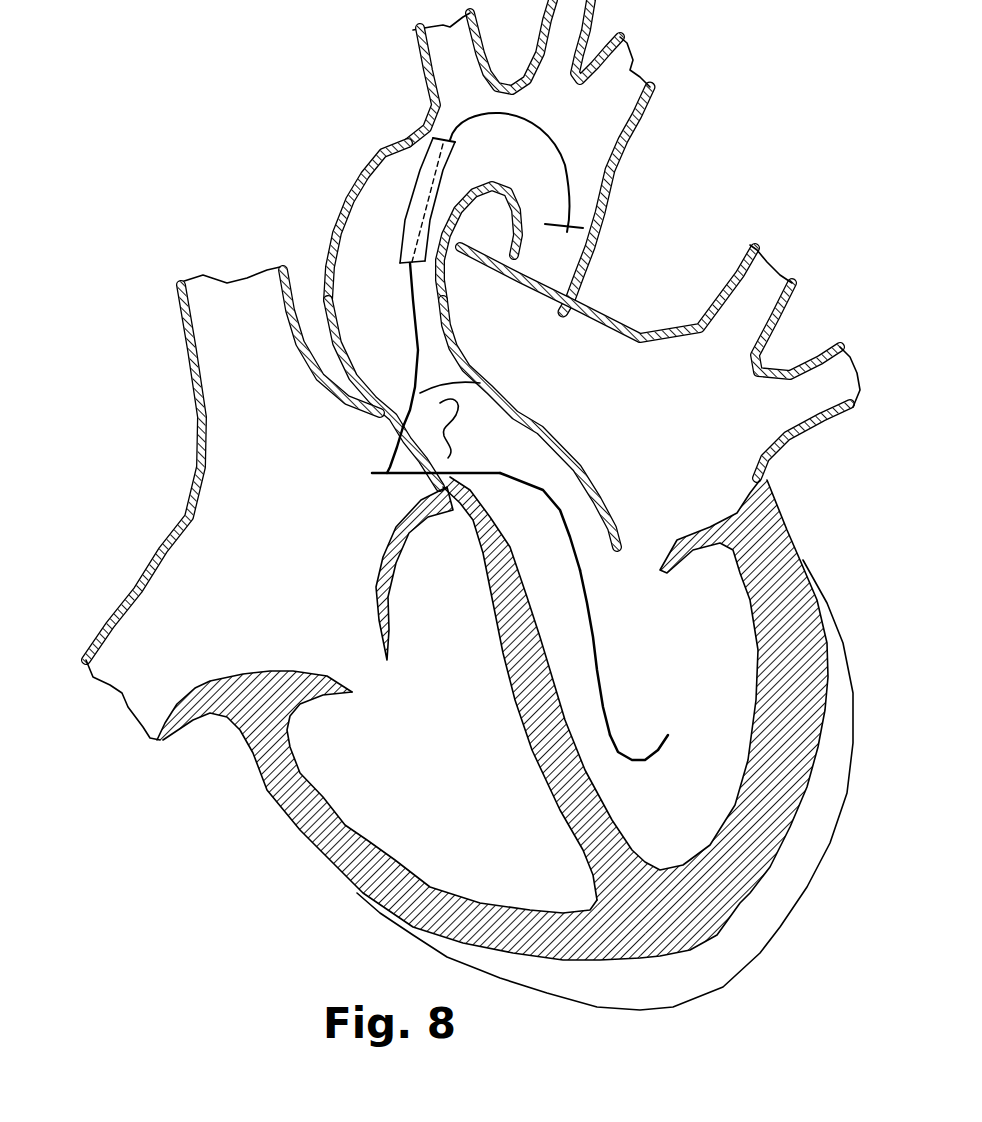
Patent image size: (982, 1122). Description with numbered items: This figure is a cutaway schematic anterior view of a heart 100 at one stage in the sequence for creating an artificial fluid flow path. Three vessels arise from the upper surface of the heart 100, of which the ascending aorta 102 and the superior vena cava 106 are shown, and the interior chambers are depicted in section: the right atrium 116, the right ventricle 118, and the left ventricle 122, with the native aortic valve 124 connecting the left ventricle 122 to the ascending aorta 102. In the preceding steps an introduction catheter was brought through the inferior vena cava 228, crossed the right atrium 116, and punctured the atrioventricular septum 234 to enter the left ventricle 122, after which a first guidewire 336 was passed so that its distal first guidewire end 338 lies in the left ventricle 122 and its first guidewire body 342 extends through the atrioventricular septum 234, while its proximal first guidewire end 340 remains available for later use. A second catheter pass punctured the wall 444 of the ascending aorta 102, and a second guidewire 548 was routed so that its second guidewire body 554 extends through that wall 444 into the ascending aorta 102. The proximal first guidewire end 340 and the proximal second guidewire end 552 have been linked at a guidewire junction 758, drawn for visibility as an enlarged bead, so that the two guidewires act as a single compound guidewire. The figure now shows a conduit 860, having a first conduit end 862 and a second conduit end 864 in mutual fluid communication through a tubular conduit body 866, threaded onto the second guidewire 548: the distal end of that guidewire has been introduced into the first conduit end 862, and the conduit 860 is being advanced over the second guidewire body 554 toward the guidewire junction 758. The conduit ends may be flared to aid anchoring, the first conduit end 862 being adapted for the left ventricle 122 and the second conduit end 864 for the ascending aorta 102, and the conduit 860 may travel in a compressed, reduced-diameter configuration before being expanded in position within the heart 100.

The heart 100 is at (172, 136).
The ascending aorta 102 is at (398, 328).
The superior vena cava 106 is at (266, 348).
The right atrium 116 is at (278, 568).
The right ventricle 118 is at (448, 763).
The left ventricle 122 is at (731, 674).
The native aortic valve 124 is at (505, 418).
The inferior vena cava 228 is at (178, 678).
The atrioventricular septum 234 is at (443, 470).
The first guidewire 336 is at (600, 657).
The distal first guidewire end 338 is at (683, 749).
The proximal first guidewire end 340 is at (378, 493).
The first guidewire body 342 is at (457, 510).
The wall of the ascending aorta 444 is at (469, 360).
The second guidewire 548 is at (530, 120).
The proximal second guidewire end 552 is at (367, 447).
The second guidewire body 554 is at (392, 282).
The guidewire junction 758 is at (372, 477).
The conduit 860 is at (400, 210).
The first conduit end 862 is at (378, 243).
The second conduit end 864 is at (413, 117).
The tubular conduit body 866 is at (400, 153).